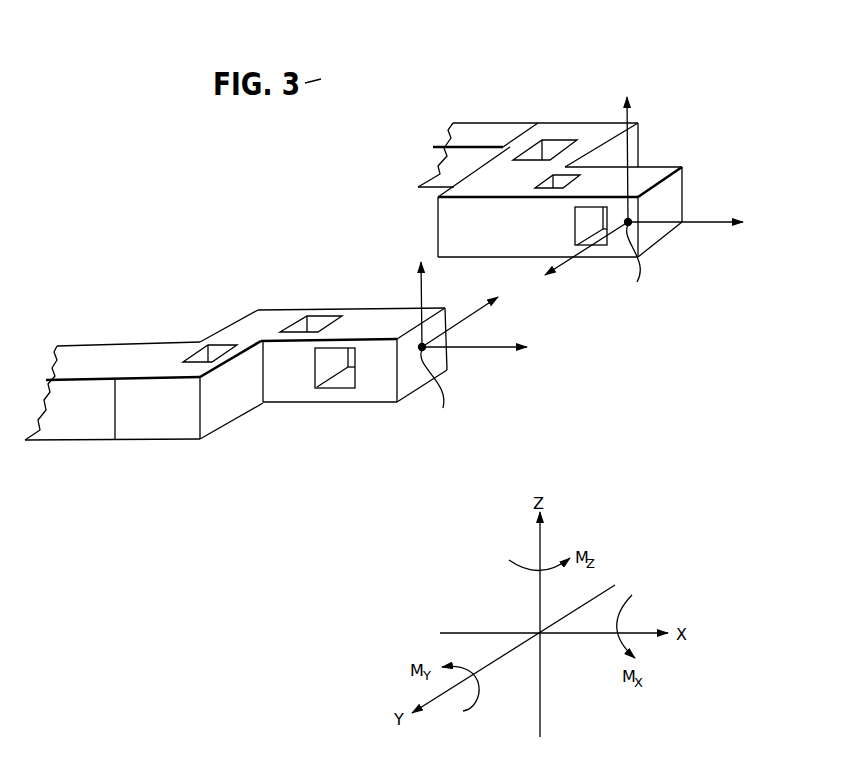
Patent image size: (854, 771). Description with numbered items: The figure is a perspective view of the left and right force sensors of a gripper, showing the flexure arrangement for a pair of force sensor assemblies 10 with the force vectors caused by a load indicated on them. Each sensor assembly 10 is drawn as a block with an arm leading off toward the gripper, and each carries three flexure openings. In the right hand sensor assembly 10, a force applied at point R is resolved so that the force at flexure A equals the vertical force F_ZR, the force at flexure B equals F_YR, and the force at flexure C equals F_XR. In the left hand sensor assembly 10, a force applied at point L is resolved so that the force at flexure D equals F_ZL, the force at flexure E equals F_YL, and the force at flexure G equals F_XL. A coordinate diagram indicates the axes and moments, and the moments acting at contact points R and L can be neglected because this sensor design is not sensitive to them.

The sensor assembly 10 is at (386, 228).
The flexure A is at (329, 327).
The flexure B is at (319, 368).
The flexure C is at (198, 357).
The flexure D is at (583, 226).
The flexure E is at (548, 179).
The flexure G is at (554, 143).